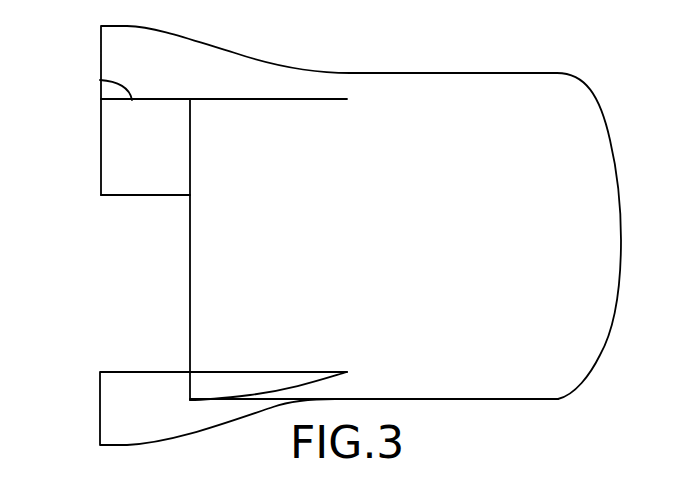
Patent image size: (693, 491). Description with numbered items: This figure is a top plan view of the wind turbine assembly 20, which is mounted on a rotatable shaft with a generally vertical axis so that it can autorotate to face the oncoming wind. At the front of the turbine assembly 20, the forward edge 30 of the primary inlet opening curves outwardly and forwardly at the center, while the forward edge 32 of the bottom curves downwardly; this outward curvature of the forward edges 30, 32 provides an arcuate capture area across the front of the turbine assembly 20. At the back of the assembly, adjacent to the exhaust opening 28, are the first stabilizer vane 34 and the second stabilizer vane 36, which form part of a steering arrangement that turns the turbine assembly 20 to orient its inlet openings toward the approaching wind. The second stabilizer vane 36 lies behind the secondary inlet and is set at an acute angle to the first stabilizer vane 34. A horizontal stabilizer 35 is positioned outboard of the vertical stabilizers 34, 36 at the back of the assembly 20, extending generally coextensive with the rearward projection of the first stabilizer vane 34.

The turbine assembly 20 is at (428, 362).
The exhaust opening 28 is at (188, 283).
The forward edge 30 is at (622, 229).
The forward edge 32 is at (163, 424).
The first stabilizer vane 34 is at (100, 80).
The horizontal stabilizer 35 is at (177, 81).
The second stabilizer vane 36 is at (205, 387).